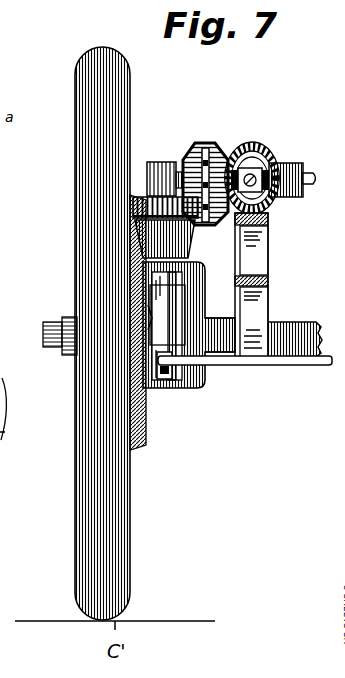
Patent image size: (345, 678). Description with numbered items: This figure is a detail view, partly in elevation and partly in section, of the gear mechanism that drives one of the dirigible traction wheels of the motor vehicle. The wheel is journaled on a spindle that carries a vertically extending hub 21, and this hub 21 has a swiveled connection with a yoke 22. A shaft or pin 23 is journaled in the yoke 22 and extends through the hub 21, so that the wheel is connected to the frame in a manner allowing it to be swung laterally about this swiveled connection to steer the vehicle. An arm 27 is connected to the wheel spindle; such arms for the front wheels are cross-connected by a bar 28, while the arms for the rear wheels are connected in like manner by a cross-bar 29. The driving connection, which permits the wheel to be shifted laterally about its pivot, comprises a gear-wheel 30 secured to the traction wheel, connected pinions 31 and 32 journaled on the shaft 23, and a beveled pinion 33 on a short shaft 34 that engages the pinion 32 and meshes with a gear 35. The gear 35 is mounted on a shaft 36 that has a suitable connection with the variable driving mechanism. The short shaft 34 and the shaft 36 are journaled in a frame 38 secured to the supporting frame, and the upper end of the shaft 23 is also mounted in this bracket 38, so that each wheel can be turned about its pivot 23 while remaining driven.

The hub 21 is at (160, 347).
The yoke 22 is at (185, 302).
The shaft or pin 23 is at (135, 292).
The arm 27 is at (168, 403).
The bar 28 is at (323, 340).
The cross-bar 29 is at (302, 366).
The gear-wheel 30 is at (144, 440).
The pinion 31 is at (138, 240).
The pinion 32 is at (132, 204).
The beveled pinion 33 is at (197, 142).
The short shaft 34 is at (183, 168).
The gear 35 is at (257, 143).
The shaft 36 is at (278, 150).
The frame or bracket 38 is at (317, 178).